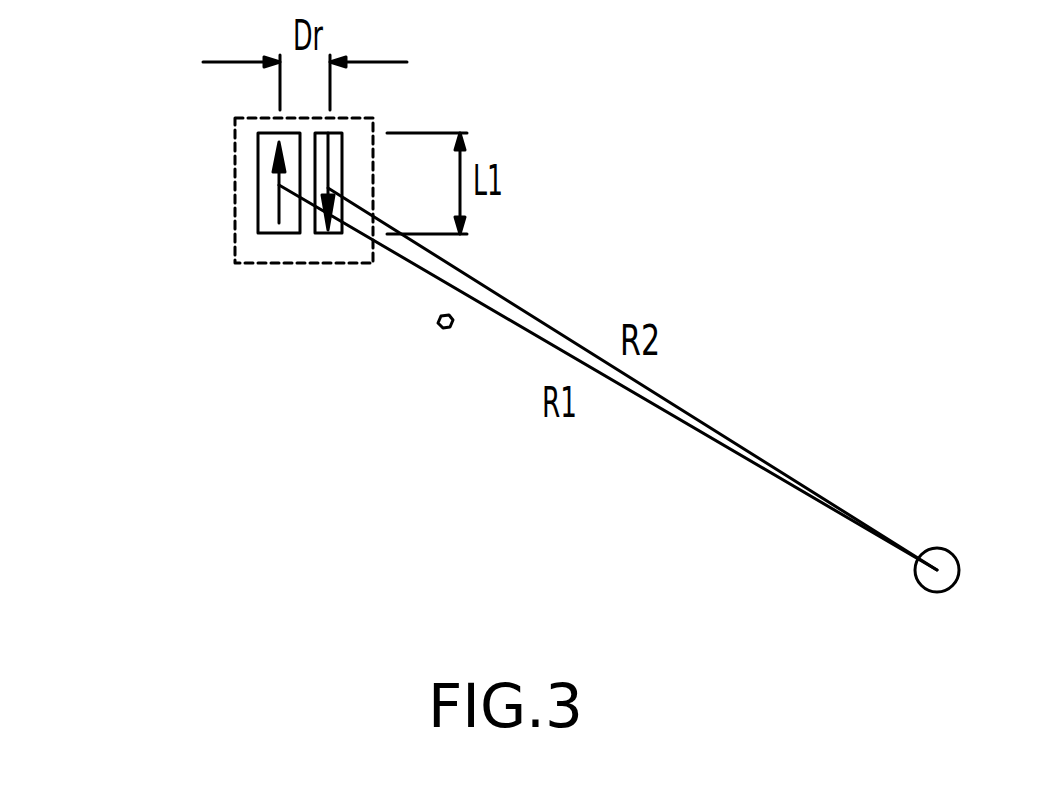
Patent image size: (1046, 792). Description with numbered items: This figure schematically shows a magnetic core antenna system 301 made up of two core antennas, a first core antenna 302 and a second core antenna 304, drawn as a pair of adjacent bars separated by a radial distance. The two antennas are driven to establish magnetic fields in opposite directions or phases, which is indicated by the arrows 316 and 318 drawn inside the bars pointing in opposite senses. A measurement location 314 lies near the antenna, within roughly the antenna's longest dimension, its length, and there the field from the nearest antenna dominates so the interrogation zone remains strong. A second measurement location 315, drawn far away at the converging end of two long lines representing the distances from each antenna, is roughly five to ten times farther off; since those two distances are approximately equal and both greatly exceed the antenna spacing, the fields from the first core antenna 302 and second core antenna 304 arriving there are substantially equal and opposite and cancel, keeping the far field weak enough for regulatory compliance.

The magnetic core antenna system 301 is at (233, 138).
The first core antenna 302 is at (258, 202).
The second core antenna 304 is at (342, 136).
The measurement location near the antenna 314 is at (440, 328).
The measurement location far from the antenna 315 is at (917, 585).
The arrow 316 is at (279, 212).
The arrow 318 is at (329, 160).